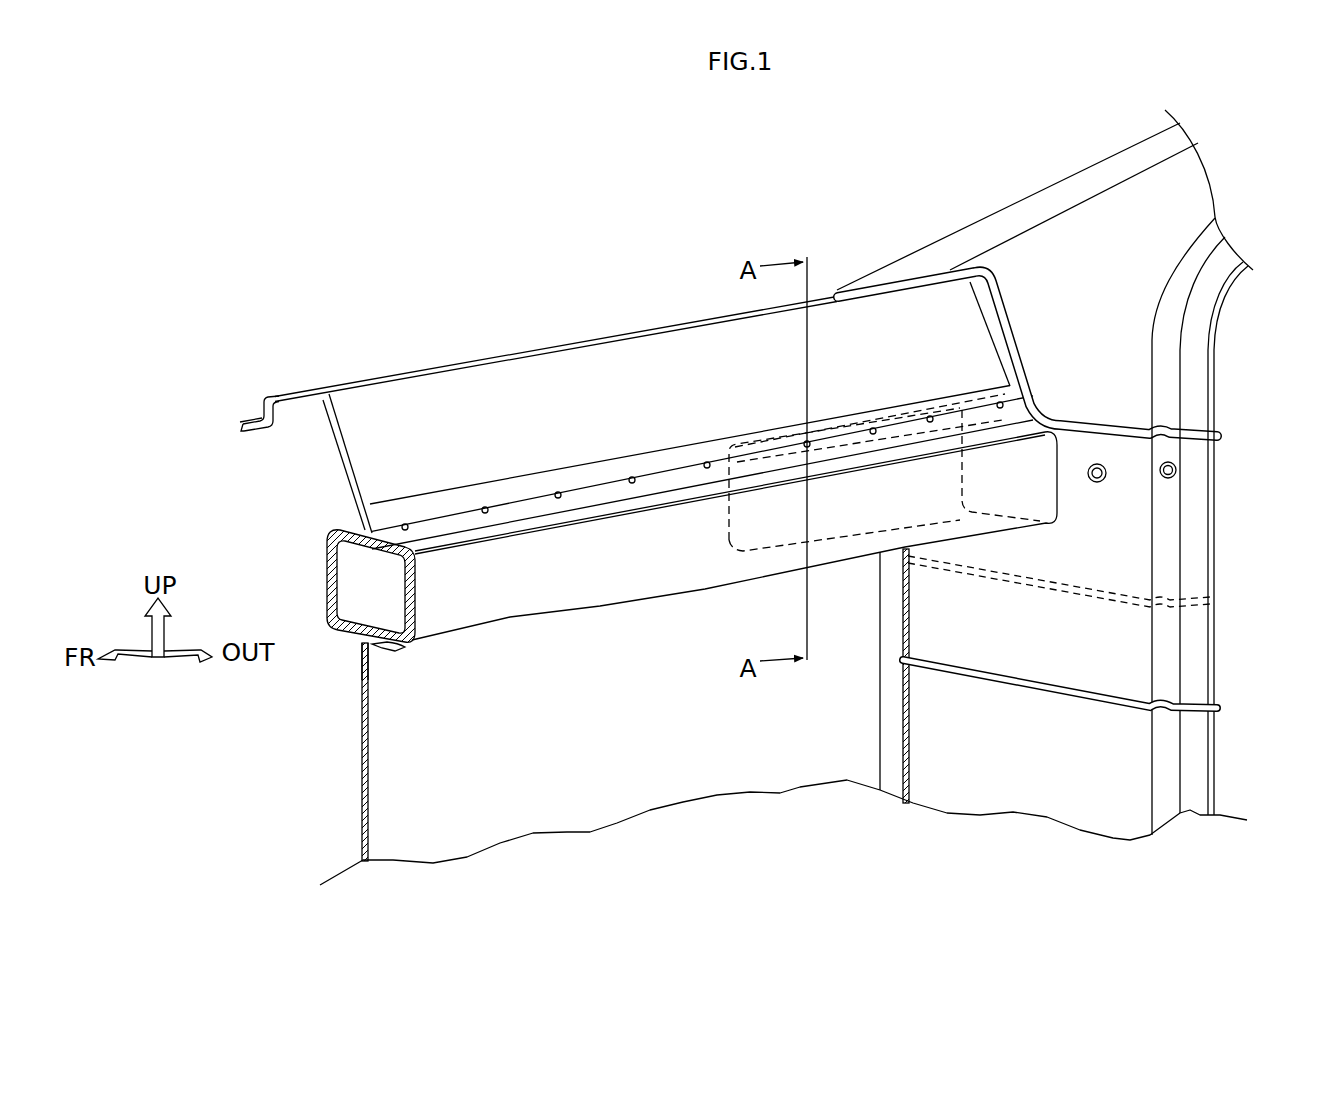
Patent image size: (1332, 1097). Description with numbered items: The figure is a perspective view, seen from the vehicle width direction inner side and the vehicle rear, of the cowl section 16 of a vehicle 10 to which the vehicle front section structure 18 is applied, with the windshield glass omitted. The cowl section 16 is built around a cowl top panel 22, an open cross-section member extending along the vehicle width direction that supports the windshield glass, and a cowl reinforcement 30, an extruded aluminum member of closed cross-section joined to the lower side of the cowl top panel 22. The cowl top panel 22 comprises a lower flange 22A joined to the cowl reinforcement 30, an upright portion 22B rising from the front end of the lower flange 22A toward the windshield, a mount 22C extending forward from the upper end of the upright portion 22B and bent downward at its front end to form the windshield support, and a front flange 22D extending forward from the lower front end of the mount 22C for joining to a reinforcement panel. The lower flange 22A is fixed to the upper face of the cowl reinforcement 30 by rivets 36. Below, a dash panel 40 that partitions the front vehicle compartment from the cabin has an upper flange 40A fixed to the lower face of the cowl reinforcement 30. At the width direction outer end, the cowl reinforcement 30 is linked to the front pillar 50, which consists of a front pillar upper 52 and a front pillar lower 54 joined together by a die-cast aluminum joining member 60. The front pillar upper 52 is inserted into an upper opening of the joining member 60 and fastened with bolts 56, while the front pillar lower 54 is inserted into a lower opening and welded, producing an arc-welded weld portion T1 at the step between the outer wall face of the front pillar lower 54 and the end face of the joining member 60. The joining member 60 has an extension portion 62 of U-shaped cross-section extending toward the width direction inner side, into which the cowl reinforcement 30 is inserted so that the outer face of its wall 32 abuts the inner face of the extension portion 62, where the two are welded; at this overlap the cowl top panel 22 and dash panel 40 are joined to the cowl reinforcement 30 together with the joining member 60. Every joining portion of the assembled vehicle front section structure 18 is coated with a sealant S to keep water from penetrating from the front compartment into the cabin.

The vehicle 10 is at (554, 190).
The cowl section 16 is at (465, 300).
The vehicle front section structure 18 is at (505, 235).
The cowl top panel 22 is at (510, 354).
The lower flange 22A is at (602, 486).
The upright portion 22B is at (380, 405).
The mount 22C is at (292, 400).
The front flange 22D is at (255, 415).
The cowl reinforcement 30 is at (328, 530).
The wall 32 is at (325, 572).
The rivets 36 is at (634, 482).
The dash panel 40 is at (356, 800).
The upper flange 40A is at (362, 675).
The front pillar 50 is at (1226, 493).
The front pillar upper 52 is at (1102, 383).
The front pillar lower 54 is at (1125, 783).
The bolts 56 is at (1097, 482).
The joining member 60 is at (1117, 663).
The extension portion 62 is at (729, 530).
The weld portion T1 is at (1217, 708).
The sealant S is at (887, 289).